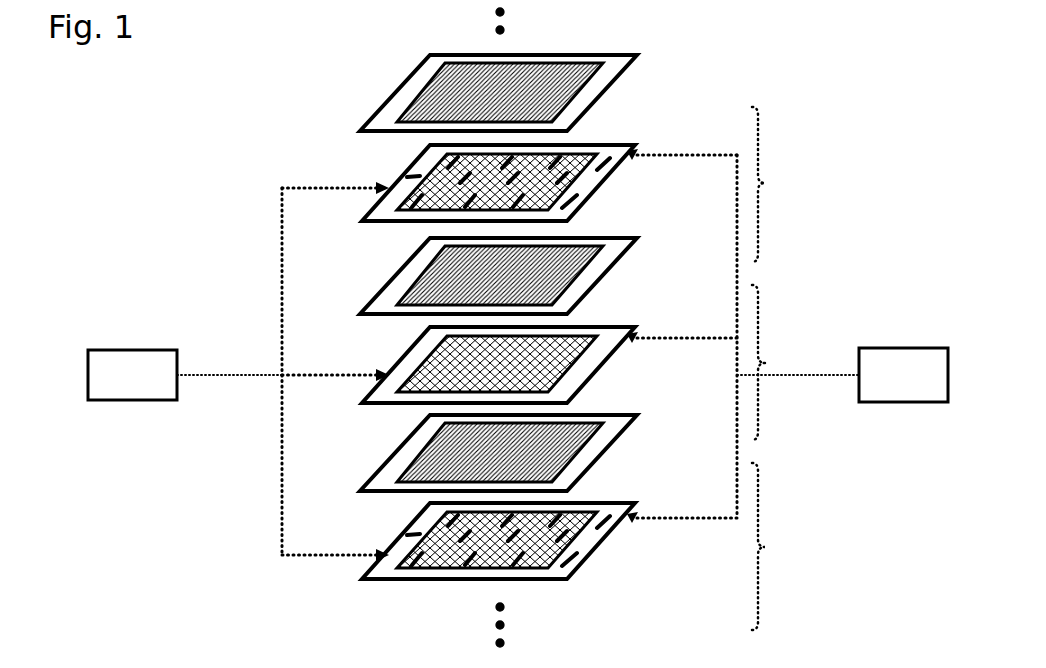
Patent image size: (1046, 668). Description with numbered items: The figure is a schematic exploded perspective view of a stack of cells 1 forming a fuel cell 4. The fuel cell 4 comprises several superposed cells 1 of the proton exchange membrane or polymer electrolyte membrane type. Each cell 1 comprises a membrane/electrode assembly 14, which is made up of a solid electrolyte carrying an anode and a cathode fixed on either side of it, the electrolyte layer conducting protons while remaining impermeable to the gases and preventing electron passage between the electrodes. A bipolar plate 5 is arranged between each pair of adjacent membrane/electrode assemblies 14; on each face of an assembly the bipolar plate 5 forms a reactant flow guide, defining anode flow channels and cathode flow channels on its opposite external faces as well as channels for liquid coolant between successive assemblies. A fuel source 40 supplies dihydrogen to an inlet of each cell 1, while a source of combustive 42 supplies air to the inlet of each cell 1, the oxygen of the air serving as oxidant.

The cell 1 is at (777, 368).
The fuel cell 4 is at (774, 63).
The bipolar plate 5 is at (539, 362).
The membrane/electrode assembly 14 is at (510, 264).
The fuel source 40 is at (185, 375).
The source of combustive 42 is at (842, 375).